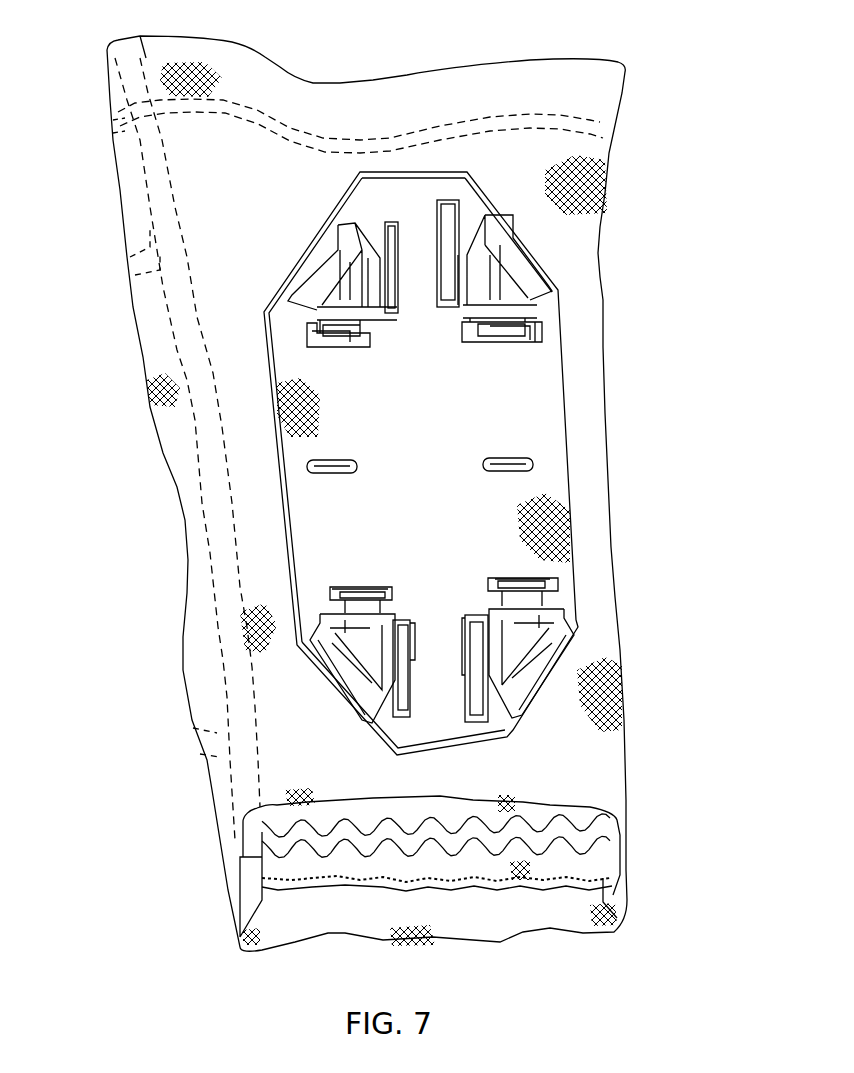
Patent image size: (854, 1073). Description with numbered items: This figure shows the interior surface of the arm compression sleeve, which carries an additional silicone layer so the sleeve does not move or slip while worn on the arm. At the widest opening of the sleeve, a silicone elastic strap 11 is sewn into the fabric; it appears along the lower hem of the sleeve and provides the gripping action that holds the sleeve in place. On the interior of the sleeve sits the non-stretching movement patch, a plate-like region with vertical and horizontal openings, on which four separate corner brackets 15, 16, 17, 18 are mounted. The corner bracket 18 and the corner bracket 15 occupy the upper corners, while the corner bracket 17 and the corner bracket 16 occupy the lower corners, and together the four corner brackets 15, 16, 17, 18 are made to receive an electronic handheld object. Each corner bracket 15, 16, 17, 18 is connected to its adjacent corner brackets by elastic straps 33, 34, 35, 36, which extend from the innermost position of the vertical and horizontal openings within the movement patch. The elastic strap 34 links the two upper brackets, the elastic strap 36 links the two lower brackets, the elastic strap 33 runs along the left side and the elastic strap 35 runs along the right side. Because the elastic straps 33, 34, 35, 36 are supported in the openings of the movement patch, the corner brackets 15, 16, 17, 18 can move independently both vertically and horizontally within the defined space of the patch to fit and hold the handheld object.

The silicone elastic strap 11 is at (557, 850).
The corner bracket 15 is at (542, 283).
The corner bracket 16 is at (573, 623).
The corner bracket 17 is at (338, 657).
The corner bracket 18 is at (320, 276).
The elastic strap 33 is at (323, 342).
The elastic strap 34 is at (449, 270).
The elastic strap 35 is at (512, 337).
The elastic strap 36 is at (404, 667).